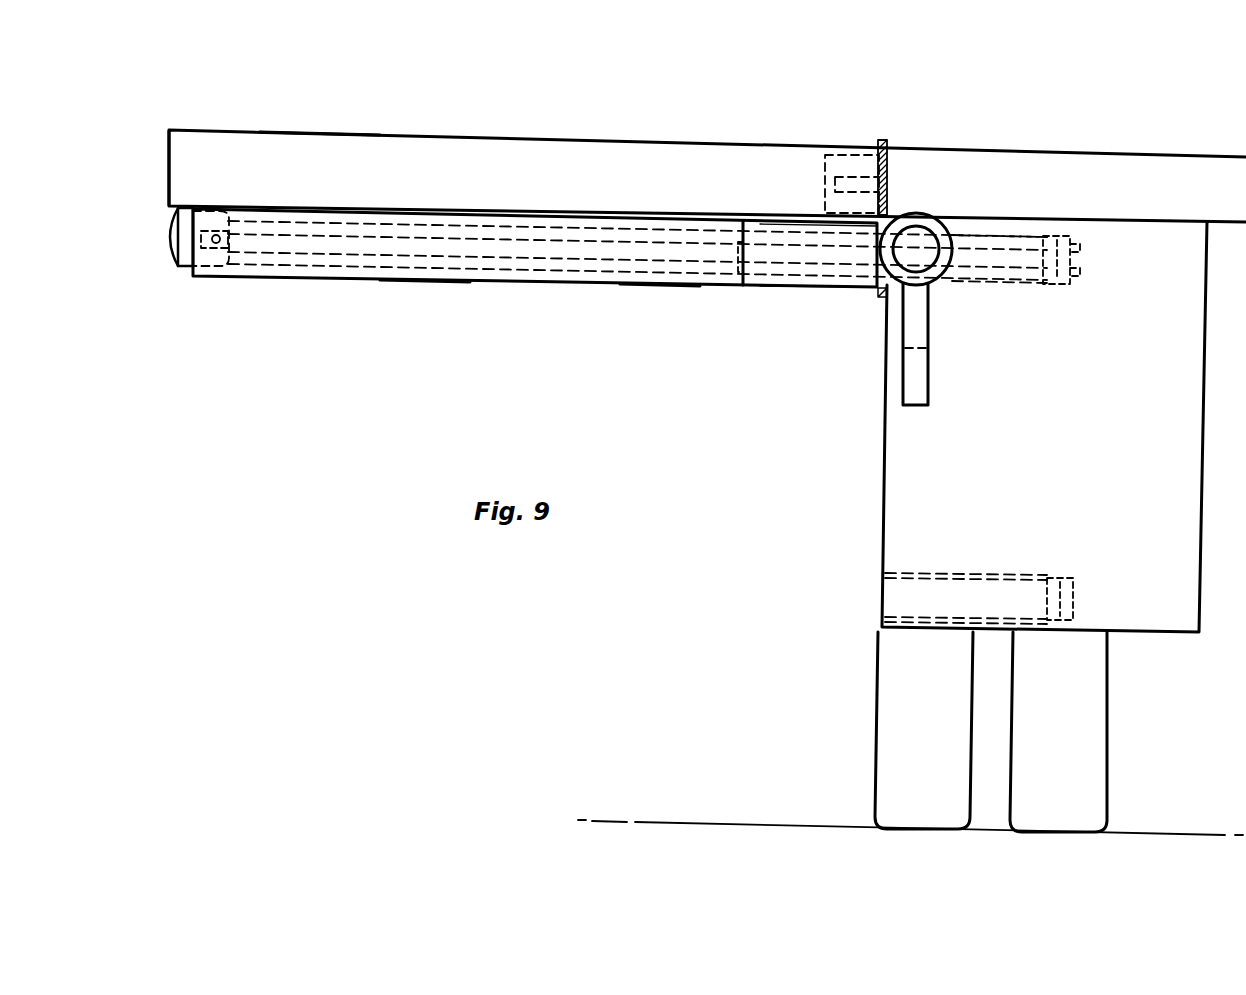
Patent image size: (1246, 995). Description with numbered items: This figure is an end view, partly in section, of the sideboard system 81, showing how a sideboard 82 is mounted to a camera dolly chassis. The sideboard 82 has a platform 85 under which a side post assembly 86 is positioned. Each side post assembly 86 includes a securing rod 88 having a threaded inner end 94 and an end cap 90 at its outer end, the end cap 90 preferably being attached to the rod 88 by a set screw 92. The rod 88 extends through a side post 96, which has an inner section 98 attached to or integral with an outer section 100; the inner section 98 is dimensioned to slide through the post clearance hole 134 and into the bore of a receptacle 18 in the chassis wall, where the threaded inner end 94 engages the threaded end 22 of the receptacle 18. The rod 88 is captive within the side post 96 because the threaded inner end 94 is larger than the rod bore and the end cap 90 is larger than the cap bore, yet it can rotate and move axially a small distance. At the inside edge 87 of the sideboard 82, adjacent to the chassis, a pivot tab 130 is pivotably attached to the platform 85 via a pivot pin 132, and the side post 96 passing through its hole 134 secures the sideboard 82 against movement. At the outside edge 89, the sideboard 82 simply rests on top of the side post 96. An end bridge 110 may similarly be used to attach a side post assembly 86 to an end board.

The sideboard system 81 is at (679, 115).
The sideboard 82 is at (456, 182).
The platform 85 is at (318, 132).
The side post assembly 86 is at (526, 306).
The inside edge 87 is at (880, 140).
The securing rod 88 is at (712, 250).
The outside edge 89 is at (169, 130).
The end cap 90 is at (173, 260).
The set screw 92 is at (215, 248).
The threaded inner end 94 is at (1085, 257).
The side post 96 is at (668, 286).
The inner section 98 is at (836, 284).
The outer section 100 is at (428, 278).
The end bridge 110 is at (915, 378).
The pivot tab 130 is at (888, 140).
The pivot pin 132 is at (853, 192).
The post clearance hole 134 is at (866, 233).
The receptacle 18 is at (1000, 242).
The threaded end 22 is at (1065, 288).